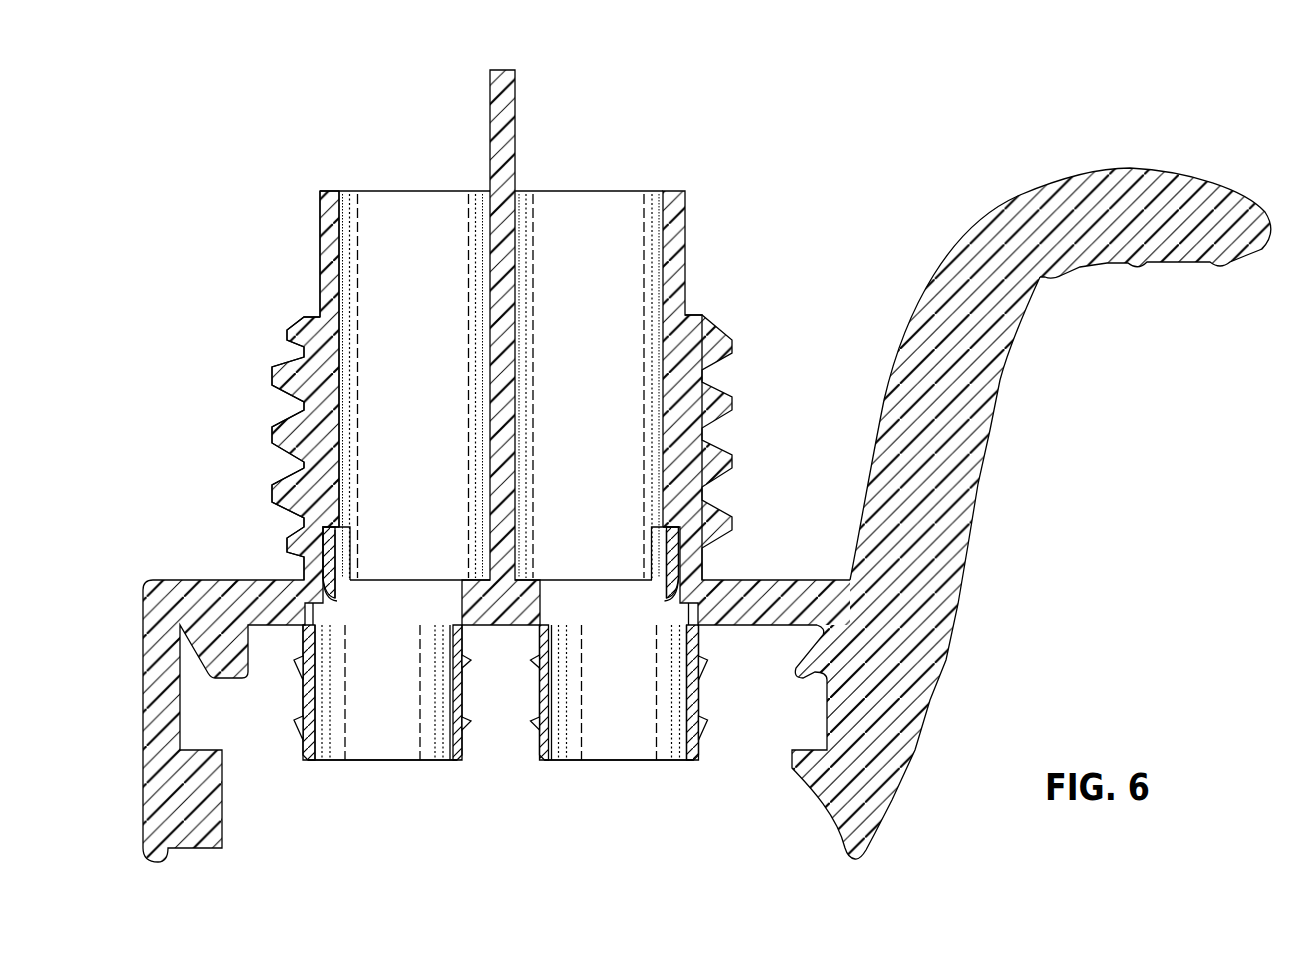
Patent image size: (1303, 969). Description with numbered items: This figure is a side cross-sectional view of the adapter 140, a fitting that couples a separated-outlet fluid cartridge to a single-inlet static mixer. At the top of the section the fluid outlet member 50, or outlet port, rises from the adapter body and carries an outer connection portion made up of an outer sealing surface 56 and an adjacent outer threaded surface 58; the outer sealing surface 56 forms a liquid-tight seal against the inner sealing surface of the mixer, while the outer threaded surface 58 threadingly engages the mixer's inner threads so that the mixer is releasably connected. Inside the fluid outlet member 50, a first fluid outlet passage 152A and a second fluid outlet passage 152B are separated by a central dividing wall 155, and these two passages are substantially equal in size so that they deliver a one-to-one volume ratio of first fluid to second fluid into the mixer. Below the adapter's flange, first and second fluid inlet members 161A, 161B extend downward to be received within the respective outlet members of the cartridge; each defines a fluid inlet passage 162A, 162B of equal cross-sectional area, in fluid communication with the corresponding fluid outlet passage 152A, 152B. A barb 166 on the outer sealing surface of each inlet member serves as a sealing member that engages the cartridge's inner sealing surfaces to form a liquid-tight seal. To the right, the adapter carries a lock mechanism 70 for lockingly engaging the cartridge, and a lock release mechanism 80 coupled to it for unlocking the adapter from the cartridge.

The closure cap 140 is at (489, 447).
The outer sealing surface 56 is at (320, 232).
The fluid outlet member 50 is at (273, 405).
The outer threaded surface 58 is at (272, 500).
The divider wall 155 is at (517, 81).
The first fluid outlet passage 152A is at (432, 393).
The second fluid outlet passage 152B is at (614, 393).
The first fluid inlet passage 162A is at (378, 697).
The second fluid inlet passage 162B is at (624, 697).
The first outlet end 161A is at (367, 762).
The second outlet end 161B is at (610, 762).
The barbs 166 is at (543, 665).
The lock release mechanism 80 is at (924, 219).
The lock mechanism 70 is at (1006, 585).